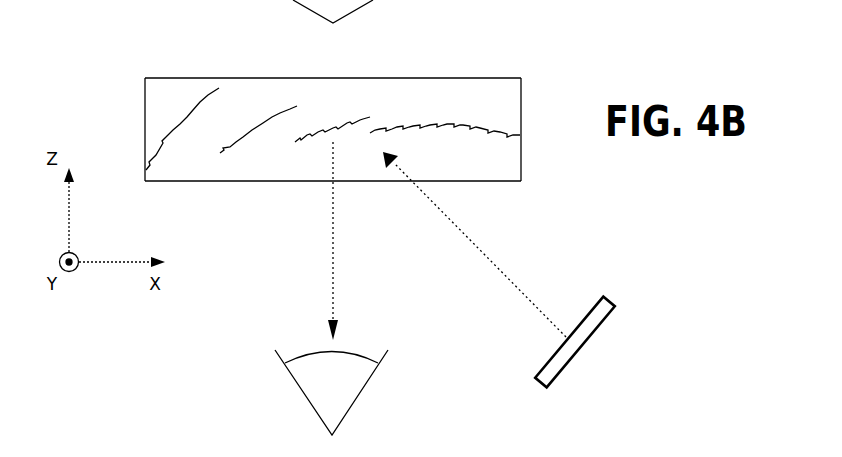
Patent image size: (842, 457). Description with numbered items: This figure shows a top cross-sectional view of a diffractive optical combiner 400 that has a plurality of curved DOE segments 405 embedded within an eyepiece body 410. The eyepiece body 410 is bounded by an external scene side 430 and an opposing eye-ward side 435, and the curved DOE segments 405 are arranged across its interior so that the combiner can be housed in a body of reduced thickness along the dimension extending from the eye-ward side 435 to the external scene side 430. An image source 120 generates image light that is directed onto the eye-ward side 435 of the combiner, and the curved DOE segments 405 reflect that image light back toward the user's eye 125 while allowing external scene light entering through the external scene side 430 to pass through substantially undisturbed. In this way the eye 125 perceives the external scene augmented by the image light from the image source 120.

The diffractive optical combiner 400 is at (398, 239).
The curved DOE segments 405 is at (205, 101).
The eyepiece body 410 is at (145, 115).
The external scene side 430 is at (488, 70).
The eye-ward side 435 is at (492, 190).
The eye 125 is at (331, 392).
The image source 120 is at (615, 305).